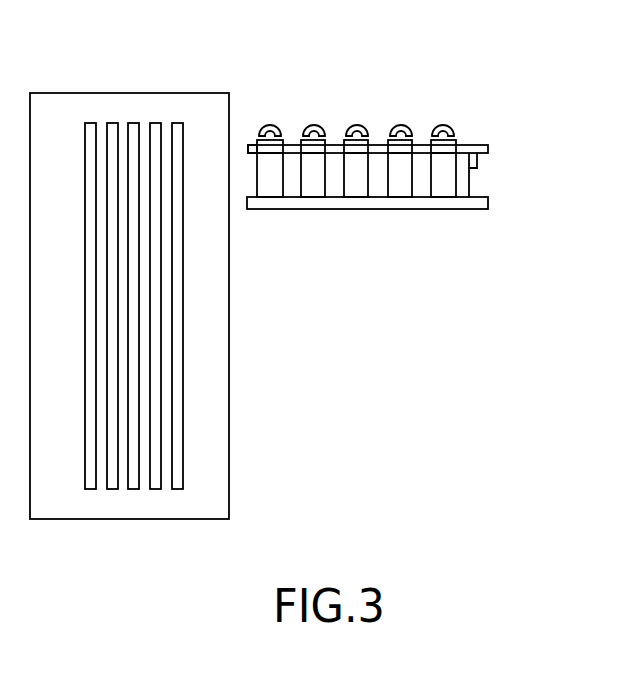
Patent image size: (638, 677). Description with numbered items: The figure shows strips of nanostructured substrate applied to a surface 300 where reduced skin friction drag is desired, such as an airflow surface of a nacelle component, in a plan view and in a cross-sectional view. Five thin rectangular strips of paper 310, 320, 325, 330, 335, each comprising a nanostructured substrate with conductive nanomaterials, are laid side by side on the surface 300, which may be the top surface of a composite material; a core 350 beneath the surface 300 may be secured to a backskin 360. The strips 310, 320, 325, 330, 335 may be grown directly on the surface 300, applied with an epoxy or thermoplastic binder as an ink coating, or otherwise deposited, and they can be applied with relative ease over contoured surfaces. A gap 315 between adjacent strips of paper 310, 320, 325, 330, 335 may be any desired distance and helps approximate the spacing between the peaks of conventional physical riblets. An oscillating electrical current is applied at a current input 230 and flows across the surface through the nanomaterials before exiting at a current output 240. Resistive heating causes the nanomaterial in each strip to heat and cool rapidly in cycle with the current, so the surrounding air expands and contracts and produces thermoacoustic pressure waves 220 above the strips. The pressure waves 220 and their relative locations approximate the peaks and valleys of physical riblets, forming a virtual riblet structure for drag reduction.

The pressure waves 220 is at (267, 124).
The current input 230 is at (478, 163).
The current output 240 is at (253, 150).
The surface 300 is at (221, 502).
The strip of nanostructured substrate 310 is at (177, 123).
The gap 315 is at (167, 482).
The strip of nanostructured substrate 320 is at (154, 123).
The strip of nanostructured substrate 325 is at (133, 123).
The strip of nanostructured substrate 330 is at (112, 123).
The strip of nanostructured substrate 335 is at (88, 123).
The core 350 is at (470, 181).
The backskin 360 is at (487, 204).